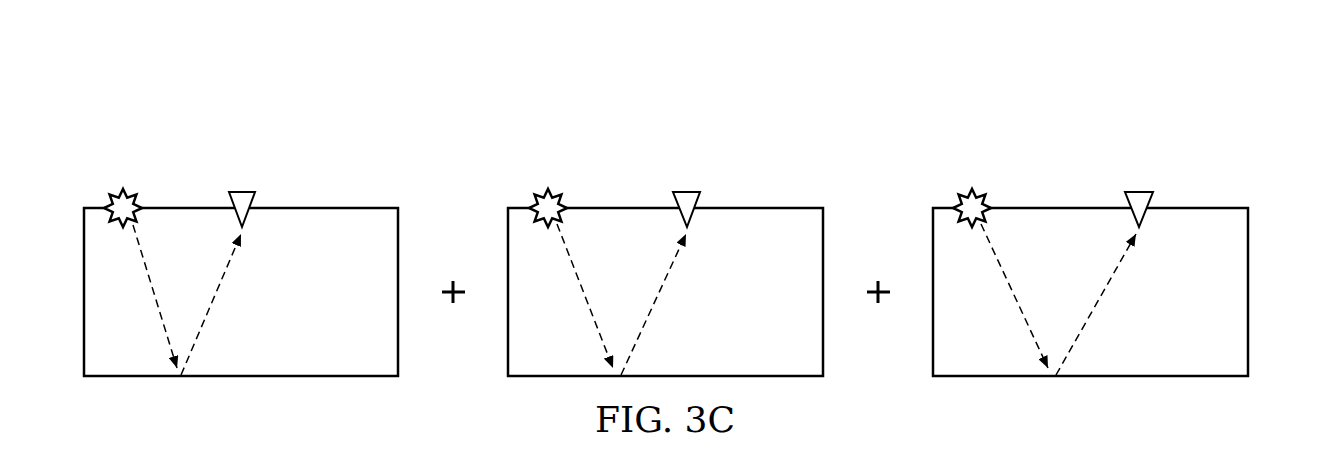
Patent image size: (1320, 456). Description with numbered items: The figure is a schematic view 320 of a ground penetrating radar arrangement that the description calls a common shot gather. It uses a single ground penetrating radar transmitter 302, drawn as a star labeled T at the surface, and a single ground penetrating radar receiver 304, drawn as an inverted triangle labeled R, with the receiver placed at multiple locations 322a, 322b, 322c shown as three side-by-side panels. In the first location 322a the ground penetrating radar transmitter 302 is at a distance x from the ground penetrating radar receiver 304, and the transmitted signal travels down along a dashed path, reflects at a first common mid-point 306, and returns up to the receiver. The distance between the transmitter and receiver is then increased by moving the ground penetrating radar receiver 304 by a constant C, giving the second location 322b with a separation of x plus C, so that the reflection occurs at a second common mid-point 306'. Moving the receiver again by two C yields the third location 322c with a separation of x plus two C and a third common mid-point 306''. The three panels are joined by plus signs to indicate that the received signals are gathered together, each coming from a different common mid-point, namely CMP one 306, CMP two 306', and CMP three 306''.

The ground penetrating radar transmitter 302 is at (105, 207).
The ground penetrating radar receiver 304 is at (256, 203).
The common mid-point 306 is at (187, 300).
The common mid-point 306' is at (621, 299).
The common mid-point 306'' is at (1058, 299).
The schematic view 320 is at (438, 88).
The receiver location 322a is at (330, 170).
The receiver location 322b is at (770, 170).
The receiver location 322c is at (1215, 170).